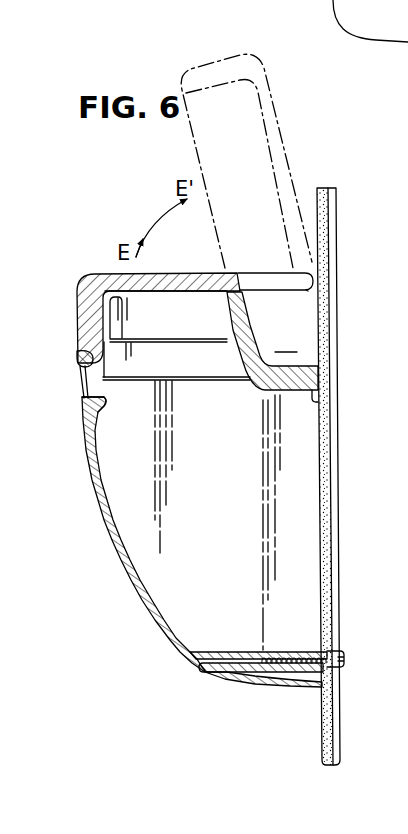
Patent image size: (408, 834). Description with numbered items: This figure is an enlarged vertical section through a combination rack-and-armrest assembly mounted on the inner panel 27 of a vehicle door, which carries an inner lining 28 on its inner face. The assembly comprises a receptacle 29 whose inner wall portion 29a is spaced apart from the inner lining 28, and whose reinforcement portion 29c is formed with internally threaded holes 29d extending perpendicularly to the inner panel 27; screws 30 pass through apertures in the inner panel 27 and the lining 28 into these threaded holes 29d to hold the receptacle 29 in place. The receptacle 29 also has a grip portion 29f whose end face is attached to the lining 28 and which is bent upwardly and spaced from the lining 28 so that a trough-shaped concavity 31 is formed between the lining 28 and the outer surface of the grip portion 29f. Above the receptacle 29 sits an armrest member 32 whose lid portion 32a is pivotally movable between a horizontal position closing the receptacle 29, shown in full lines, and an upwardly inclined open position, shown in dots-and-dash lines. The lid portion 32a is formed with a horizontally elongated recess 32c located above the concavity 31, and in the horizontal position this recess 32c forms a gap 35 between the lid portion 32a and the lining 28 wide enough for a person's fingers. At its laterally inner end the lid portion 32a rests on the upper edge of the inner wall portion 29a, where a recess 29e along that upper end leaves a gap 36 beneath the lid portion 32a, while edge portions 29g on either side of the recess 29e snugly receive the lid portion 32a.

The inner panel 27 is at (340, 473).
The inner lining 28 is at (321, 512).
The receptacle 29 is at (146, 613).
The inner wall portion 29a is at (98, 497).
The reinforcement portion 29c is at (303, 652).
The internally threaded holes 29d is at (240, 664).
The recess 29e is at (83, 402).
The grip portion 29f is at (260, 393).
The edge portions 29g is at (77, 359).
The screws 30 is at (338, 657).
The trough-shaped concavity 31 is at (288, 343).
The armrest member 32 is at (78, 279).
The lid portion 32a is at (177, 293).
The recess 32c is at (242, 276).
The gap 35 is at (308, 291).
The gap 36 is at (82, 375).